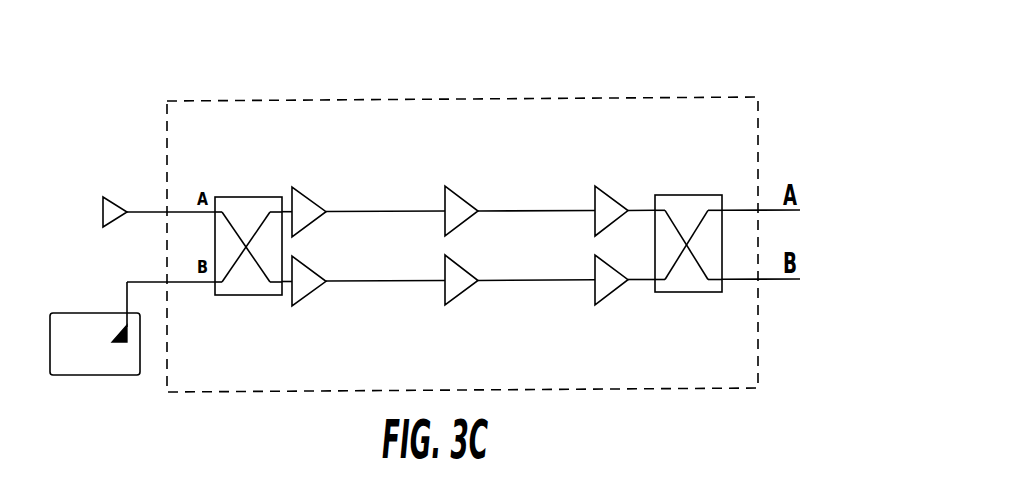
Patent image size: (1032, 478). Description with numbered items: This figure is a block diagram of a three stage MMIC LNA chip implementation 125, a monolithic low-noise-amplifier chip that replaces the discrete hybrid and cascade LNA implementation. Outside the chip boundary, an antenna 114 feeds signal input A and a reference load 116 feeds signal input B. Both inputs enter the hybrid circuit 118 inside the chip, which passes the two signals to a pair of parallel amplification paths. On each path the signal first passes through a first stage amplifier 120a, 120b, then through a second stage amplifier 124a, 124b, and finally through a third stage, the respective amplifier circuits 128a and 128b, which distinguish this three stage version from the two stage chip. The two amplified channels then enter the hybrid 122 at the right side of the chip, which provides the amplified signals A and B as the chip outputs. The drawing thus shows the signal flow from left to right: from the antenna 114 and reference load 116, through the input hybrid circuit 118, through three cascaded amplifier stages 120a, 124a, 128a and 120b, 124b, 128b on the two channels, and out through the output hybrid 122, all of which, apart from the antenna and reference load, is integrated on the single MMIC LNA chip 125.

The antenna 114 is at (121, 198).
The reference load 116 is at (80, 375).
The hybrid circuit 118 is at (243, 197).
The amplifier 120a is at (312, 201).
The amplifier 120b is at (307, 295).
The hybrid 122 is at (685, 195).
The amplifier 124a is at (467, 200).
The amplifier 124b is at (462, 294).
The three stage MMIC LNA chip implementation 125 is at (588, 97).
The amplifier circuit 128a is at (618, 198).
The amplifier circuit 128b is at (608, 295).